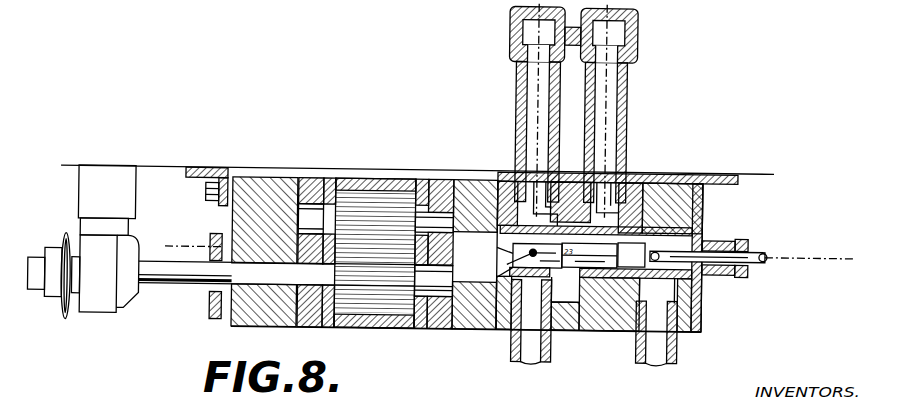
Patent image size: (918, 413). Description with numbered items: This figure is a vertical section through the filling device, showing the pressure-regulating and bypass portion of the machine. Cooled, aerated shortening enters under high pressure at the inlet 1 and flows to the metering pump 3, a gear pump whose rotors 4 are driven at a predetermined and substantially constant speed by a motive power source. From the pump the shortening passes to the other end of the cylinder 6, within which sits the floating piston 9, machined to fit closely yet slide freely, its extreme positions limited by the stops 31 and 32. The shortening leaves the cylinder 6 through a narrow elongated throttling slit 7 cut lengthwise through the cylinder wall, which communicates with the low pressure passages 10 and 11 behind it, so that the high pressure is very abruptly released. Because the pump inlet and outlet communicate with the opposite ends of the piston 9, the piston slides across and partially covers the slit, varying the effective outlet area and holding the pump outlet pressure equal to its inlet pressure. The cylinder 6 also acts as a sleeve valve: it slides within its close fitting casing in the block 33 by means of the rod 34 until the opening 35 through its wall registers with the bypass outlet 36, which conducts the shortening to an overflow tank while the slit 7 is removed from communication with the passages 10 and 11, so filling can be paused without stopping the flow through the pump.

The inlet 1 is at (680, 350).
The metering pump 3 is at (380, 320).
The rotors 4 is at (370, 197).
The cylinder 6 is at (698, 240).
The throttling slit 7 is at (497, 246).
The floating piston 9 is at (605, 252).
The low pressure passage 10 is at (527, 80).
The low pressure passage 11 is at (622, 80).
The stop 31 is at (508, 259).
The stop 32 is at (694, 275).
The block 33 is at (660, 190).
The rod 34 is at (757, 262).
The opening 35 is at (572, 277).
The bypass outlet 36 is at (505, 333).